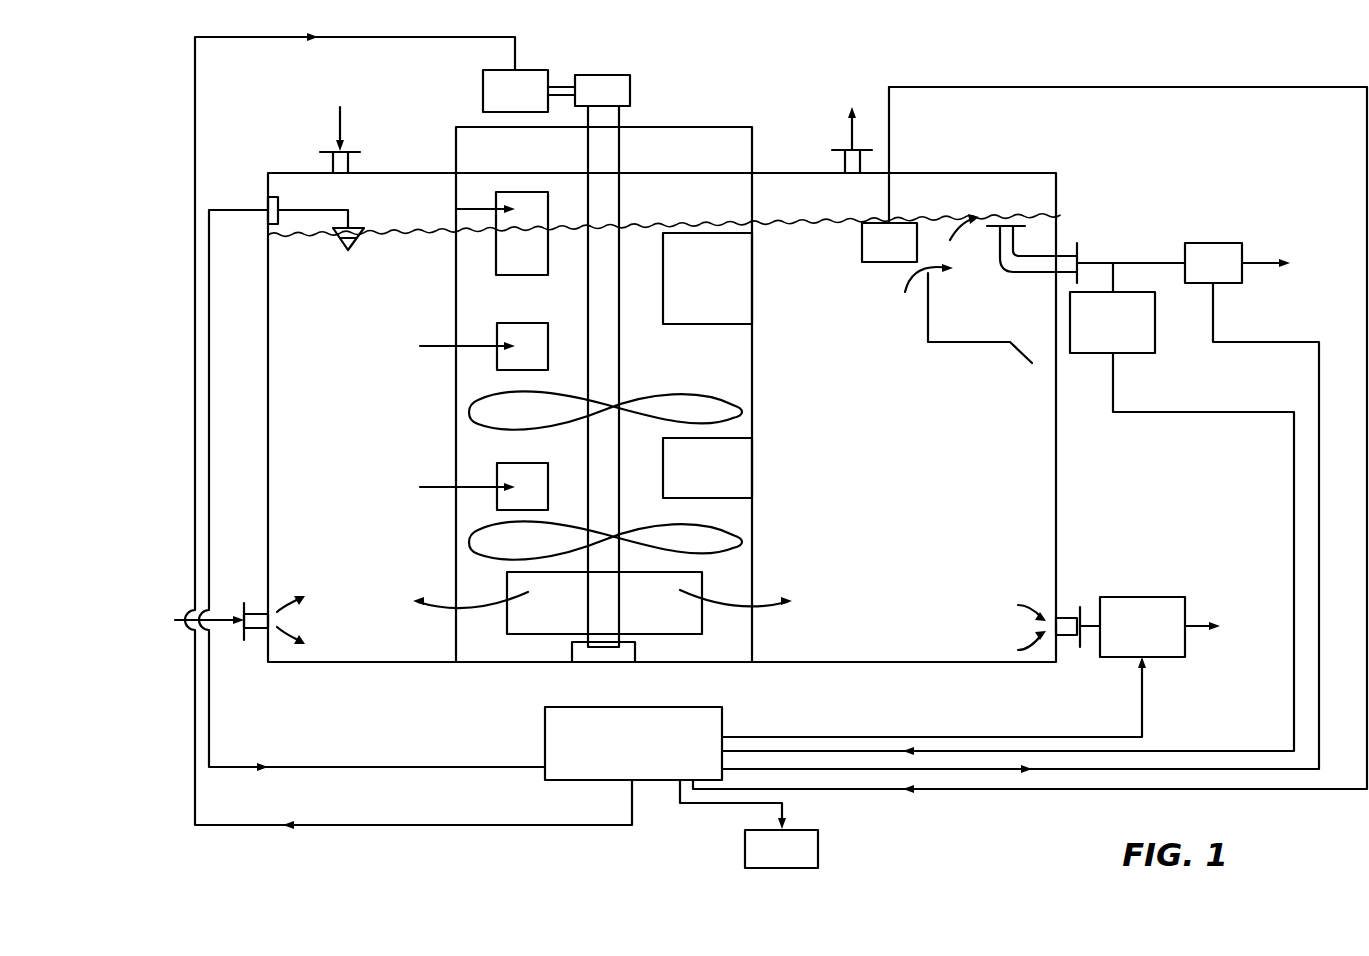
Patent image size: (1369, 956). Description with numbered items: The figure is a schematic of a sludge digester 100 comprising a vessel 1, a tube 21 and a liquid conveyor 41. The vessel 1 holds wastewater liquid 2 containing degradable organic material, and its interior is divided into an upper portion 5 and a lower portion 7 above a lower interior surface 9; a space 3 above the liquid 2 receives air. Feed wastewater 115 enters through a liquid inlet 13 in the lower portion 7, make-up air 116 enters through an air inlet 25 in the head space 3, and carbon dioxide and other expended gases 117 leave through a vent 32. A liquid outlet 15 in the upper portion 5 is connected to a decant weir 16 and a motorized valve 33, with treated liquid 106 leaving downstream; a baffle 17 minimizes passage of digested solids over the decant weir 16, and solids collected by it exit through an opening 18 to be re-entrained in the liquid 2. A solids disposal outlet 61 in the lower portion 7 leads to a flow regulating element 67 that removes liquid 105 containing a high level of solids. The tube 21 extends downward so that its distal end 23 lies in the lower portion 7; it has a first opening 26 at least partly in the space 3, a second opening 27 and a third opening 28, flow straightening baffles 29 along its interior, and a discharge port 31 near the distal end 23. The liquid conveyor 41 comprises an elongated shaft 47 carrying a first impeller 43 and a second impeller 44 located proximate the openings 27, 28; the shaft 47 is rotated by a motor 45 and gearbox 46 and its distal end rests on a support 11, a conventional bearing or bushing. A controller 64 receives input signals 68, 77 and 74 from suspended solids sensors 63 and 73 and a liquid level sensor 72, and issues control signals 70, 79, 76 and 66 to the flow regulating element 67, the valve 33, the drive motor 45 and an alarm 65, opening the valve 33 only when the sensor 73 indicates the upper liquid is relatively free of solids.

The sludge digester 100 is at (920, 50).
The vessel 1 is at (947, 172).
The wastewater liquid 2 is at (982, 493).
The space 3 is at (992, 205).
The upper portion 5 is at (325, 315).
The lower portion 7 is at (327, 635).
The lower interior surface 9 is at (915, 660).
The support 11 is at (637, 650).
The liquid inlet 13 is at (258, 634).
The liquid outlet 15 is at (1063, 250).
The decant weir 16 is at (1018, 228).
The baffle 17 is at (952, 342).
The opening 18 is at (1043, 364).
The tube 21 is at (755, 362).
The distal end 23 is at (755, 588).
The air inlet 25 is at (332, 165).
The first opening 26 is at (495, 247).
The second opening 27 is at (495, 360).
The third opening 28 is at (495, 498).
The flow straightening baffles 29 is at (740, 290).
The discharge port 31 is at (705, 617).
The vent 32 is at (845, 165).
The motorized valve 33 is at (1197, 278).
The liquid conveyor 41 is at (606, 58).
The first impeller 43 is at (735, 408).
The second impeller 44 is at (735, 535).
The motor 45 is at (532, 69).
The gearbox 46 is at (600, 75).
The shaft 47 is at (620, 157).
The solids disposal outlet 61 is at (1065, 618).
The suspended solids sensor 63 is at (1097, 337).
The controller 64 is at (617, 758).
The alarm 65 is at (766, 864).
The control signal 66 is at (707, 806).
The flow regulating element 67 is at (1126, 642).
The input signal 68 is at (1222, 751).
The control signal 70 is at (810, 737).
The liquid level sensor 72 is at (350, 225).
The suspended solids sensor 73 is at (873, 258).
The input signal 74 is at (435, 767).
The control signal 76 is at (323, 825).
The input signal 77 is at (950, 795).
The control signal 79 is at (1318, 487).
The liquid containing a high level of solids 105 is at (1227, 641).
The treated water outlet 106 is at (1295, 278).
The feed wastewater 115 is at (113, 633).
The make-up air 116 is at (315, 100).
The expended gases 117 is at (827, 100).